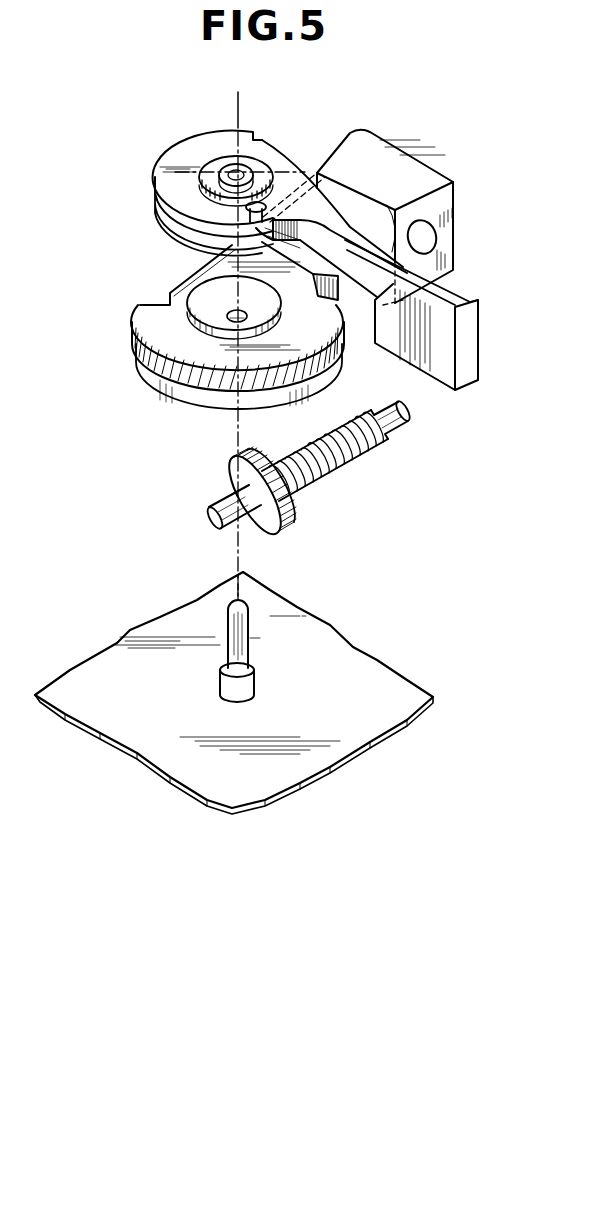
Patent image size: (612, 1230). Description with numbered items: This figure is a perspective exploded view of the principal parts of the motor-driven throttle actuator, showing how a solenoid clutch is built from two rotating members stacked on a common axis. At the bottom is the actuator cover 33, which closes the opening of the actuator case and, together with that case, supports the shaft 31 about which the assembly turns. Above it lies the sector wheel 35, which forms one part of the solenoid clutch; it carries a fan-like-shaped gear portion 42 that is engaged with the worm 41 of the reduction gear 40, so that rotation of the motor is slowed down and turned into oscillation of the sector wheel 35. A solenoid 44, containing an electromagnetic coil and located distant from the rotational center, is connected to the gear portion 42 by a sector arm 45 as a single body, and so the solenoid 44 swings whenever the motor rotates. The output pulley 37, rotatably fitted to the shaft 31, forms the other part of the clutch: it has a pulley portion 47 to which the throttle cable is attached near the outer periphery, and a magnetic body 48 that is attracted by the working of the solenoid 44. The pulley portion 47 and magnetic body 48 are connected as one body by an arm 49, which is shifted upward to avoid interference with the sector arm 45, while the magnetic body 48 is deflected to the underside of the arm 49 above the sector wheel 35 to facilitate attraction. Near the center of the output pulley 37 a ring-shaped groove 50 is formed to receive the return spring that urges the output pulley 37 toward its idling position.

The shaft 31 is at (250, 604).
The actuator cover 33 is at (176, 782).
The sector wheel 35 is at (162, 299).
The output pulley 37 is at (265, 130).
The reduction gear 40 is at (312, 497).
The worm 41 is at (372, 450).
The gear portion 42 is at (150, 355).
The solenoid 44 is at (443, 236).
The sector arm 45 is at (342, 308).
The pulley portion 47 is at (156, 193).
The magnetic body 48 is at (450, 304).
The arm 49 is at (305, 213).
The ring-shaped groove 50 is at (262, 170).